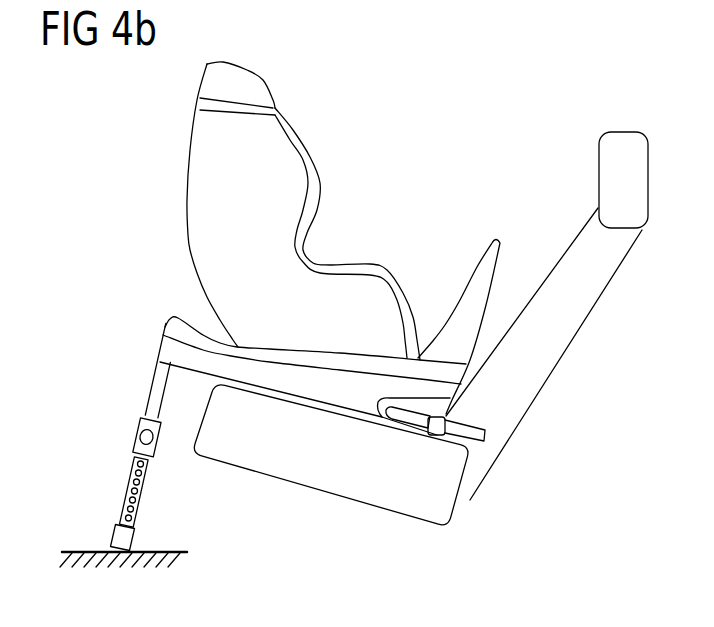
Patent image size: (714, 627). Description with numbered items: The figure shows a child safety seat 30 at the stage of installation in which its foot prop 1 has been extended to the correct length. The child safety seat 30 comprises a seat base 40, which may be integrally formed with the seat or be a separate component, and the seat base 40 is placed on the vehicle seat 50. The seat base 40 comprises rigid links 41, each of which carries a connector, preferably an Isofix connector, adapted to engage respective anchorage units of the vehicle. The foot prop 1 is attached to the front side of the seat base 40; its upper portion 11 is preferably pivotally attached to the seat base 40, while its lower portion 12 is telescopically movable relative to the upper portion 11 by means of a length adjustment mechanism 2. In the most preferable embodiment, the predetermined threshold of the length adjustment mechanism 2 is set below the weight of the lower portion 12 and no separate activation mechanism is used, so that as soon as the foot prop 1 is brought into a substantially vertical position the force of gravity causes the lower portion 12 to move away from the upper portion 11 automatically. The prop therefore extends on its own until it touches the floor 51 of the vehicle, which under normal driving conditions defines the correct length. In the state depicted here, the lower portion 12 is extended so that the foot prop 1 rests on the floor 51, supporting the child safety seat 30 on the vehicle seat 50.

The foot prop 1 is at (120, 420).
The length adjustment mechanism 2 is at (136, 446).
The upper portion 11 is at (157, 381).
The lower portion 12 is at (120, 502).
The child safety seat 30 is at (196, 168).
The seat base 40 is at (170, 350).
The rigid links 41 is at (454, 442).
The vehicle seat 50 is at (348, 488).
The floor 51 is at (172, 558).